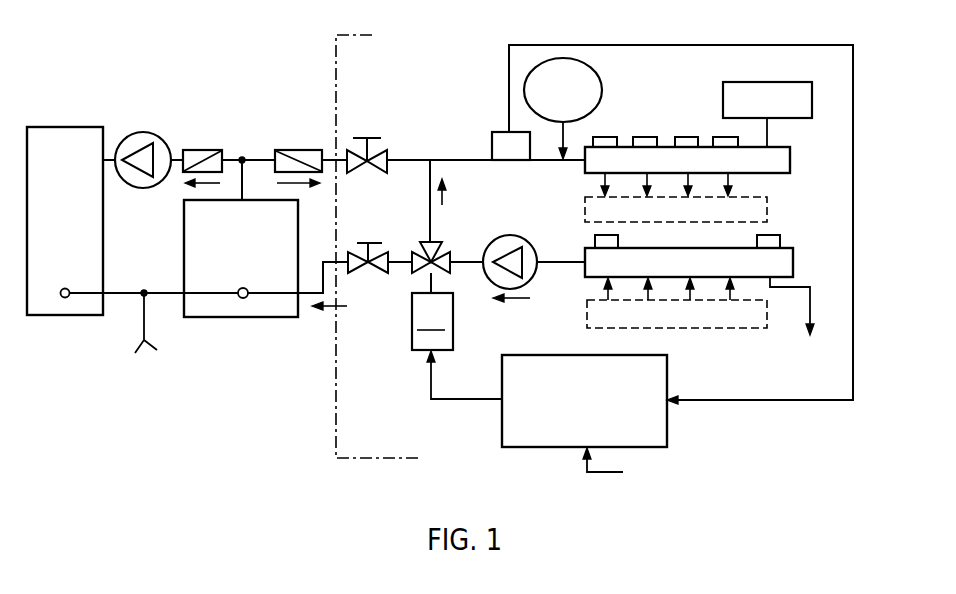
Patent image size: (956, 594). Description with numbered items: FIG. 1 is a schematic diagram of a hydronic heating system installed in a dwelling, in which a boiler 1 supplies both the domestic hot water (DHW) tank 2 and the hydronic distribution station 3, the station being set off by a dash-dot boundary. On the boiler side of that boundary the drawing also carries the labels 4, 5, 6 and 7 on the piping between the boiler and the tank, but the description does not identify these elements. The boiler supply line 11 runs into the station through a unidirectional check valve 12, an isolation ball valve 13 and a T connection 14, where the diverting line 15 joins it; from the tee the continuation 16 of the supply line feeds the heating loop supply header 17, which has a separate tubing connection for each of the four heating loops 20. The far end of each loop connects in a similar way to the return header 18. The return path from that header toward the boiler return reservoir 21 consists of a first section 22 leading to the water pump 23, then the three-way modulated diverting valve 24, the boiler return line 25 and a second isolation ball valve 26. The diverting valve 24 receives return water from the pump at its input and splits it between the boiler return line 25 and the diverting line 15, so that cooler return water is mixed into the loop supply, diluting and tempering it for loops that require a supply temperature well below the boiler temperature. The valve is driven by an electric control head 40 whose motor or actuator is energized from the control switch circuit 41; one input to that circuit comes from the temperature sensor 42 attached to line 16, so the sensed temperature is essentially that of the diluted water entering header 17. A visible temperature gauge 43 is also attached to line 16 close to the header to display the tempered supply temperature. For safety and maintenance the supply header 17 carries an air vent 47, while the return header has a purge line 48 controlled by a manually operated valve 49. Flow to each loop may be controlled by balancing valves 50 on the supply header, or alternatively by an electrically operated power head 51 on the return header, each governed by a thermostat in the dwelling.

The boiler 1 is at (184, 242).
The domestic hot water (DHW) tank 2 is at (68, 319).
The hydronic distribution station 3 is at (335, 92).
The boiler loop 4 is at (178, 114).
The check valve 5 is at (198, 150).
The boiler loop pump 6 is at (140, 134).
The boiler fill connection 7 is at (147, 332).
The boiler supply line 11 is at (257, 158).
The unidirectional check valve 12 is at (295, 150).
The isolation ball valve 13 is at (367, 135).
The T connection 14 is at (430, 158).
The diverting line 15 is at (431, 226).
The continuation of supply line 16 is at (462, 157).
The heating loop supply header 17 is at (793, 157).
The return header 18 is at (793, 262).
The heating loops 20 is at (783, 200).
The boiler return reservoir 21 is at (247, 289).
The first section of return line 22 is at (557, 260).
The water pump 23 is at (510, 234).
The three-way modulated diverting valve 24 is at (451, 268).
The boiler return line 25 is at (347, 286).
The isolation ball valve 26 is at (367, 240).
The electric control head 40 is at (457, 336).
The control switch circuit 41 is at (667, 373).
The temperature sensor 42 is at (495, 132).
The temperature gauge 43 is at (604, 82).
The air vent 47 is at (723, 100).
The purge line 48 is at (810, 307).
The manually operated valve 49 is at (780, 240).
The balancing valves 50 is at (605, 136).
The electrically operated power head 51 is at (620, 240).